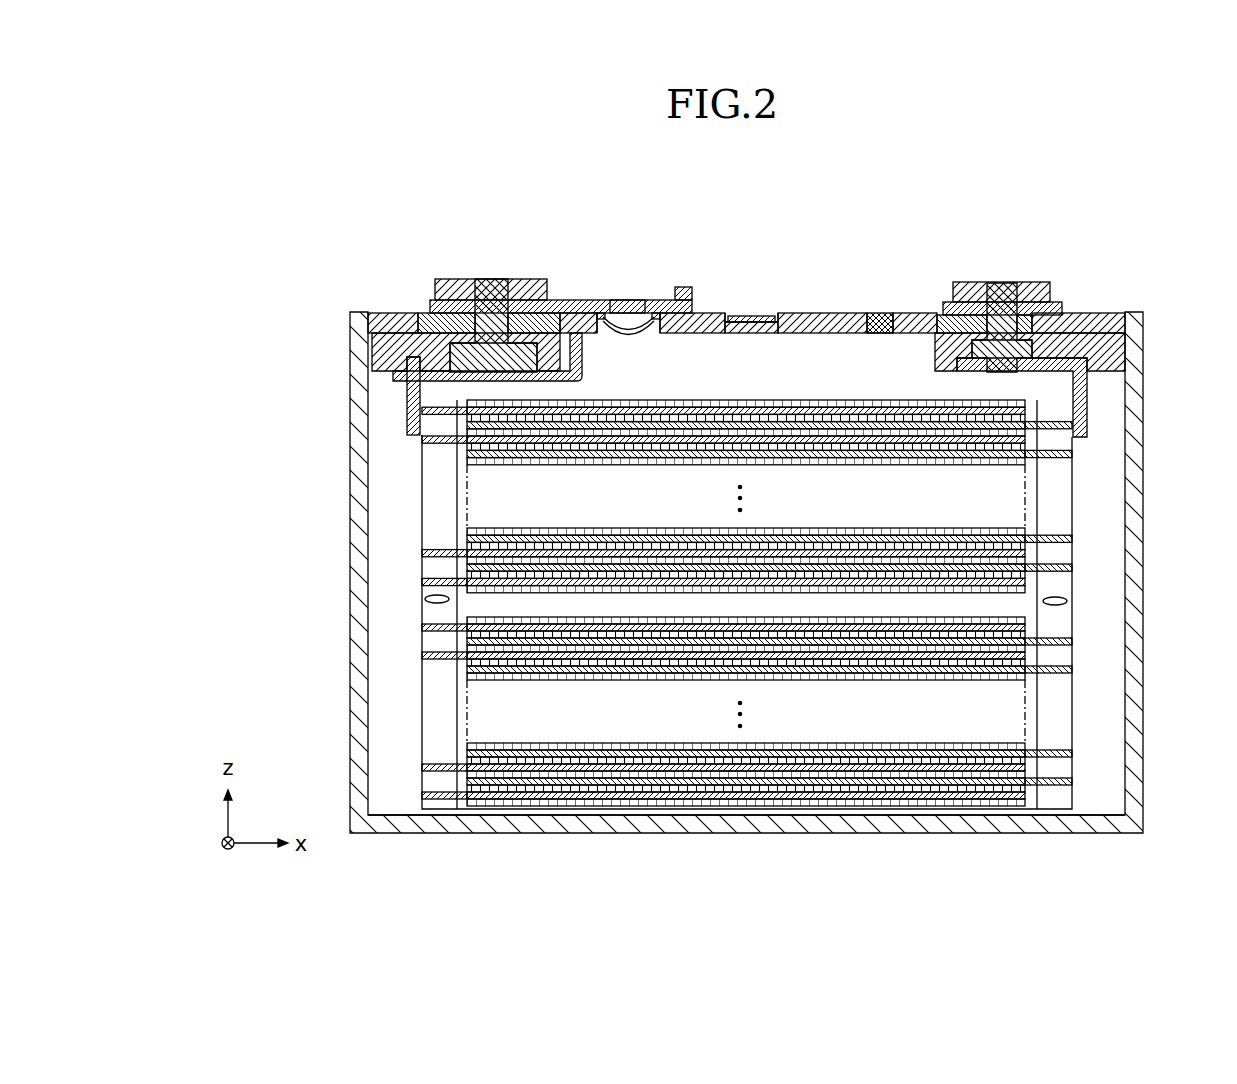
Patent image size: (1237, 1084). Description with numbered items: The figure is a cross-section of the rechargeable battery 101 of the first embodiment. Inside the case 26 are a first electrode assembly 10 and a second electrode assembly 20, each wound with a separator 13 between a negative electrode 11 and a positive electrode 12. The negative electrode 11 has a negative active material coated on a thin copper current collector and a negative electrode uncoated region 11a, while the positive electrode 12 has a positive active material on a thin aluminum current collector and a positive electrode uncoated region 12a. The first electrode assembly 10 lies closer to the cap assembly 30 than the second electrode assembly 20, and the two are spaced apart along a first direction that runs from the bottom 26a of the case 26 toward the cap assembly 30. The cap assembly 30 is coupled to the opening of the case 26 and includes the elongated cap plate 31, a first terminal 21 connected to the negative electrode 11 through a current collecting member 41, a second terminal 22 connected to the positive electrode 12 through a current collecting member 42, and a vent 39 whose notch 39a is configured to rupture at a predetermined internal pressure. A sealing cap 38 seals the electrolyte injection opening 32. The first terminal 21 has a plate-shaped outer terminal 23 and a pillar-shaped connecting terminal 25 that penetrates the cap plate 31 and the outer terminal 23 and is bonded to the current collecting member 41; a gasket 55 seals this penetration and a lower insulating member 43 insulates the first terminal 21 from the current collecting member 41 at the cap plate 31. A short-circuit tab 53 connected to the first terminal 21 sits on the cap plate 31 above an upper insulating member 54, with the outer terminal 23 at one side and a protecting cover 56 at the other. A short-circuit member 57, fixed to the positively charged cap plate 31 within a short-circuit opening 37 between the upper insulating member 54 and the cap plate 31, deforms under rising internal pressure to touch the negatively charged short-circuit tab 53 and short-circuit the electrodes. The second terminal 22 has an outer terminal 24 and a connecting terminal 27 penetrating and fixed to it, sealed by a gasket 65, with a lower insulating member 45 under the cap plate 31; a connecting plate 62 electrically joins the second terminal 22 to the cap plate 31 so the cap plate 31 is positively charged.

The rechargeable battery 101 is at (773, 166).
The first electrode assembly 10 is at (744, 559).
The negative electrode 11 is at (525, 550).
The negative electrode uncoated region 11a is at (435, 550).
The positive electrode 12 is at (995, 585).
The positive electrode uncoated region 12a is at (1073, 580).
The separator 13 is at (1005, 595).
The second electrode assembly 20 is at (837, 808).
The first terminal 21 is at (491, 274).
The second terminal 22 is at (1001, 278).
The outer terminal 23 is at (455, 290).
The outer terminal 24 is at (1030, 300).
The connecting terminal 25 is at (447, 210).
The case 26 is at (1132, 706).
The bottom 26a is at (1097, 823).
The connecting terminal 27 is at (1043, 218).
The cap assembly 30 is at (713, 318).
The cap plate 31 is at (385, 320).
The electrolyte injection opening 32 is at (878, 336).
The short-circuit opening 37 is at (598, 312).
The sealing cap 38 is at (880, 315).
The vent 39 is at (780, 318).
The notch 39a is at (750, 316).
The current collecting member 41 is at (412, 410).
The current collecting member 42 is at (1088, 412).
The lower insulating member 43 is at (425, 345).
The lower insulating member 45 is at (1105, 352).
The short-circuit tab 53 is at (562, 306).
The upper insulating member 54 is at (688, 296).
The gasket 55 is at (415, 318).
The protecting cover 56 is at (633, 293).
The short-circuit member 57 is at (640, 330).
The connecting plate 62 is at (1060, 310).
The gasket 65 is at (978, 327).